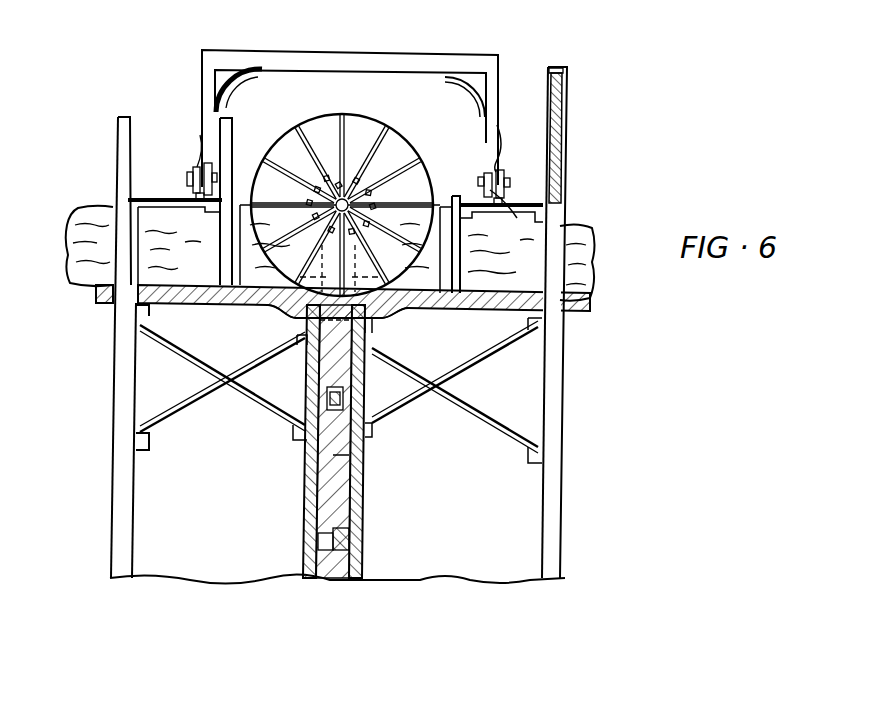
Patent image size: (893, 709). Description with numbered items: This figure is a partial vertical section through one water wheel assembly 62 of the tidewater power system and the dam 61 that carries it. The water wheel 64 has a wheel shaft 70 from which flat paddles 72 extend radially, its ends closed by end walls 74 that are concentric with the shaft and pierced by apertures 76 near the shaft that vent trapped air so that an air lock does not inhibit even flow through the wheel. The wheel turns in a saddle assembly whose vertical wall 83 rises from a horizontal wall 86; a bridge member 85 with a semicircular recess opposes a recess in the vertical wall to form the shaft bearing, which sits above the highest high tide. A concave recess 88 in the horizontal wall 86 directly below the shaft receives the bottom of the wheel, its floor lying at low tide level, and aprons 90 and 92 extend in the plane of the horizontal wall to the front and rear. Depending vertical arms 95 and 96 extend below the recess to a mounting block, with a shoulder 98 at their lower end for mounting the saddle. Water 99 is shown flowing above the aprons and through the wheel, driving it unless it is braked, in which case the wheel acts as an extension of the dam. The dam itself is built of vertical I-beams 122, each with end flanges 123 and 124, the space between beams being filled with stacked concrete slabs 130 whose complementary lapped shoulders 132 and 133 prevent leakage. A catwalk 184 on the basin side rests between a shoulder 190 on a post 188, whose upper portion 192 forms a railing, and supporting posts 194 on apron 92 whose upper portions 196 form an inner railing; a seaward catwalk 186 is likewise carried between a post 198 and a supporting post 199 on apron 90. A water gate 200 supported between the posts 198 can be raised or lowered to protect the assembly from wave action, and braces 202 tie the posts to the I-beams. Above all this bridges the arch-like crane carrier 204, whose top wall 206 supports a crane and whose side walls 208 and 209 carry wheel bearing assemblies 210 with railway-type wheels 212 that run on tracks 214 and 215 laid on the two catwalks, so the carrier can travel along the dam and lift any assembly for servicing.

The dam 61 is at (363, 534).
The water wheel assembly 62 is at (354, 148).
The water wheel 64 is at (366, 115).
The wheel shaft 70 is at (370, 240).
The flat paddles 72 is at (313, 131).
The end walls 74 is at (401, 151).
The apertures 76 is at (372, 171).
The vertical wall 83 is at (450, 298).
The bridge member 85 is at (312, 189).
The horizontal wall 86 is at (242, 305).
The concave recess 88 is at (300, 318).
The apron 90 is at (494, 305).
The apron 92 is at (165, 300).
The vertical arm 95 is at (353, 385).
The vertical arm 96 is at (406, 316).
The shoulder 98 is at (368, 438).
The water 99 is at (102, 212).
The I-beams 122 is at (347, 441).
The end flange 123 is at (302, 520).
The end flange 124 is at (365, 458).
The slabs 130 is at (303, 440).
The lapped shoulder 132 is at (345, 400).
The lapped shoulder 133 is at (325, 457).
The catwalk 184 is at (136, 197).
The catwalk 186 is at (522, 202).
The post 188 is at (112, 406).
The shoulder 190 is at (72, 250).
The upper portion of post 192 is at (124, 130).
The supporting posts 194 is at (215, 258).
The upper portions of supporting posts 196 is at (226, 126).
The post 198 is at (562, 362).
The supporting post 199 is at (478, 232).
The water gate 200 is at (572, 88).
The braces 202 is at (192, 364).
The crane carrier 204 is at (255, 47).
The top wall 206 is at (415, 63).
The side wall 208 is at (208, 88).
The side wall 209 is at (496, 86).
The wheel bearing assemblies 210 is at (194, 197).
The railway-type wheels 212 is at (194, 170).
The track 214 is at (150, 235).
The track 215 is at (478, 262).